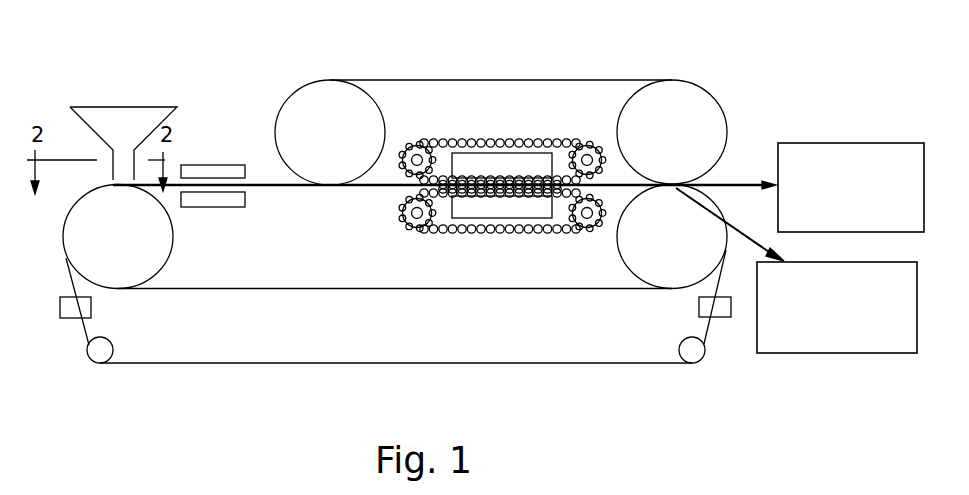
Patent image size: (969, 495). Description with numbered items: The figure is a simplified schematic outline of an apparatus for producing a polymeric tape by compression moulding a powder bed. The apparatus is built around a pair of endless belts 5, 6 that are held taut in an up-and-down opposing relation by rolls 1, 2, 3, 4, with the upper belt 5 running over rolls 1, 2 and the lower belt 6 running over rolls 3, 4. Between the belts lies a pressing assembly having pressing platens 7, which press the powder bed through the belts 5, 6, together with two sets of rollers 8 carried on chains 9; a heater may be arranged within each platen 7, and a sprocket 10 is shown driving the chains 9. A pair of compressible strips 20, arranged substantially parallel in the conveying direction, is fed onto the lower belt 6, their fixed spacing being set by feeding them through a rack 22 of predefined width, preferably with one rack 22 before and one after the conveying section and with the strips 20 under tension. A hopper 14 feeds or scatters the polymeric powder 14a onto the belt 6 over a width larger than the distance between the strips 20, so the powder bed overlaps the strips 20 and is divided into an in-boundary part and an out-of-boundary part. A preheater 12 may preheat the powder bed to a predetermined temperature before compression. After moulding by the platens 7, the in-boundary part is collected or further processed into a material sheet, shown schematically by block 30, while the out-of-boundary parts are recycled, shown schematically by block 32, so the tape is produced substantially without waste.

The roll 1 is at (300, 118).
The roll 2 is at (668, 103).
The roll 3 is at (132, 272).
The roll 4 is at (677, 268).
The endless belt 5 is at (482, 78).
The endless belt 6 is at (276, 190).
The pressing platen 7 is at (530, 163).
The set of rollers 8 is at (471, 178).
The chain 9 is at (437, 143).
The sprocket 10 is at (417, 158).
The preheater 12 is at (217, 165).
The hopper 14 is at (143, 119).
The polymeric powder 14a is at (118, 168).
The compressible strip 20 is at (236, 352).
The rack 22 is at (60, 318).
The block 30 is at (866, 143).
The block 32 is at (860, 355).